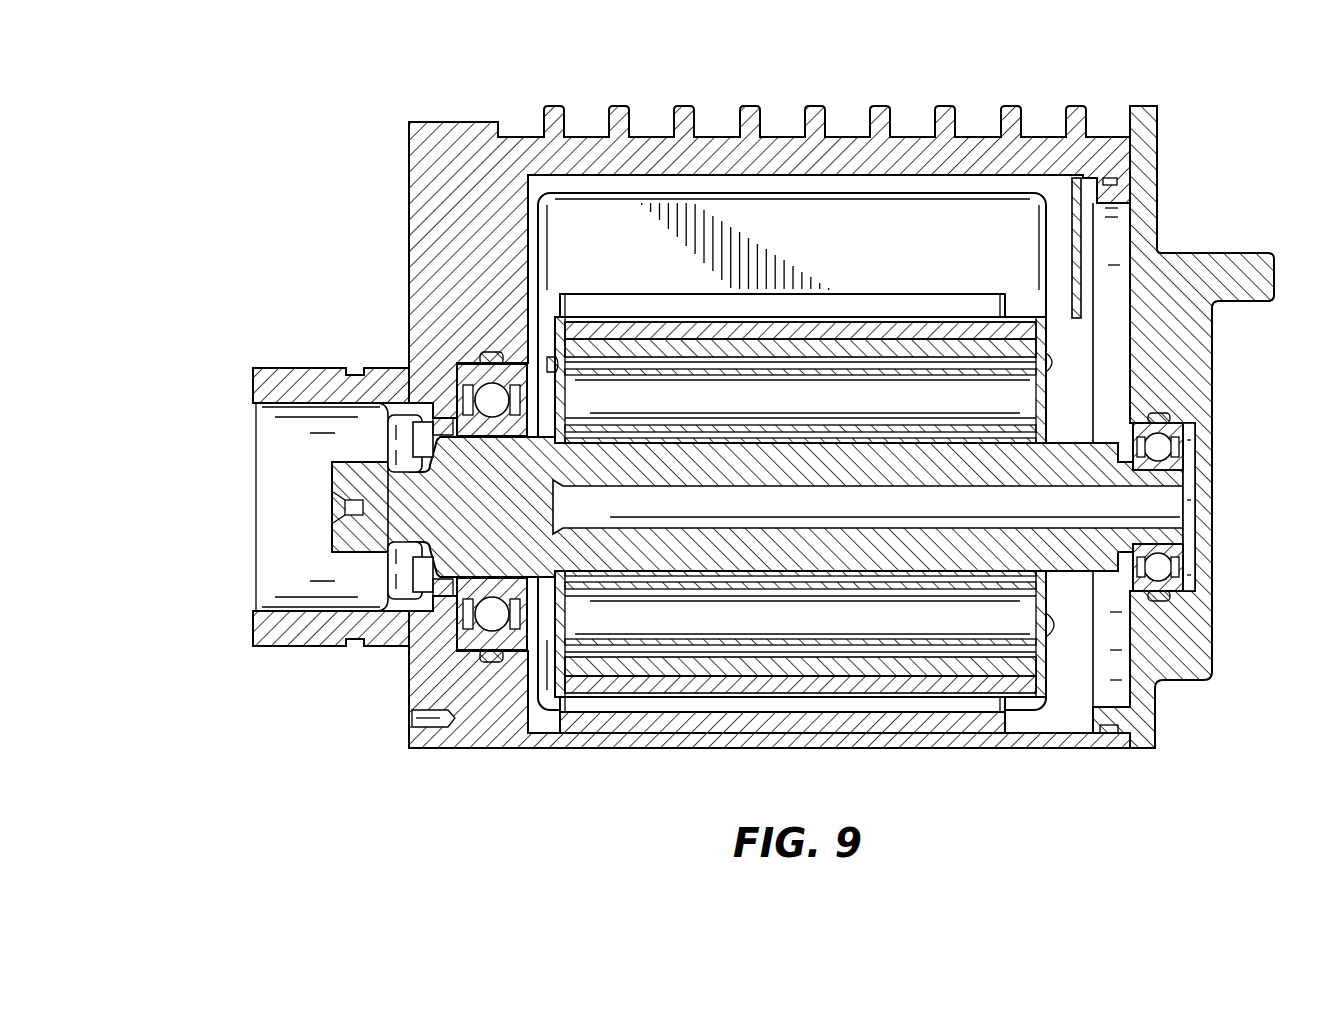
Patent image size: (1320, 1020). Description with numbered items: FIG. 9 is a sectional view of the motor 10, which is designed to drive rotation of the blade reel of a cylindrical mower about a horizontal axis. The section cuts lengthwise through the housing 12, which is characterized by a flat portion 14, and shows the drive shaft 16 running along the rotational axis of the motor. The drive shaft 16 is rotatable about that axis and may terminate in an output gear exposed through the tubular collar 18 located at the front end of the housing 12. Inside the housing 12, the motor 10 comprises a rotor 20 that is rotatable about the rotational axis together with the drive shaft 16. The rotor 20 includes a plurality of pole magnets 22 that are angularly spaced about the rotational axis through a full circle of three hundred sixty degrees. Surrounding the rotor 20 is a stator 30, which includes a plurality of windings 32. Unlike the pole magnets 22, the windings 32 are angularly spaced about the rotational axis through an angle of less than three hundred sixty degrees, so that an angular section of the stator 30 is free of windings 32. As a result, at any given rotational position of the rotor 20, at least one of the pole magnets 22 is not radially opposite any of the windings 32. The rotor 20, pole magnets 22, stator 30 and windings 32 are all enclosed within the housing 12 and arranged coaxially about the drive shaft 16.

The motor 10 is at (240, 170).
The housing 12 is at (950, 103).
The flat portion 14 is at (885, 748).
The drive shaft 16 is at (372, 462).
The tubular collar 18 is at (295, 368).
The rotor 20 is at (1044, 404).
The pole magnets 22 is at (604, 325).
The stator 30 is at (540, 263).
The windings 32 is at (897, 271).